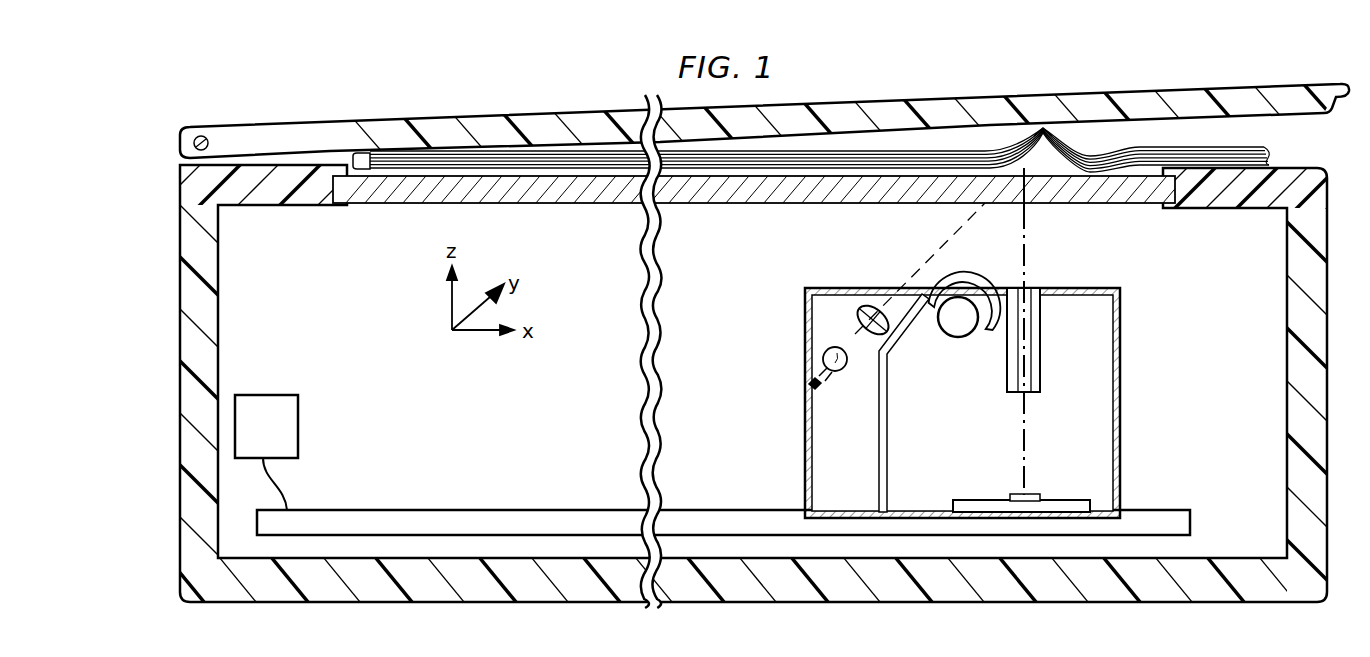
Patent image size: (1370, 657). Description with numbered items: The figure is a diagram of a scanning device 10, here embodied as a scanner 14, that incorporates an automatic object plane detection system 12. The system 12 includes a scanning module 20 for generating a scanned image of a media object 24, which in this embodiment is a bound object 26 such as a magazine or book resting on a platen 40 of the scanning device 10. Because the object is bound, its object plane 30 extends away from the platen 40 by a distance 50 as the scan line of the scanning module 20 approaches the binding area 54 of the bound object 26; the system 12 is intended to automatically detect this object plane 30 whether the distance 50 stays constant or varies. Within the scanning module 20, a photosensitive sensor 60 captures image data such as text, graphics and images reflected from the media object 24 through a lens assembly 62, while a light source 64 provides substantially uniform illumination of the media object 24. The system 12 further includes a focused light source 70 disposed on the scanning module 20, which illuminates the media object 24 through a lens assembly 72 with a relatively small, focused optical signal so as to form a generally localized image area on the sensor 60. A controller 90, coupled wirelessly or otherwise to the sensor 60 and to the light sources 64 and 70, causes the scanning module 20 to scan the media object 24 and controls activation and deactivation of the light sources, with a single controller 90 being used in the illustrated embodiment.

The scanning device 10 is at (126, 302).
The automatic object plane detection system 12 is at (1262, 259).
The scanner 14 is at (180, 385).
The scanning module 20 is at (1120, 342).
The media object 24 is at (852, 112).
The bound object 26 is at (946, 158).
The object plane 30 is at (1085, 190).
The platen 40 is at (358, 156).
The distance 50 is at (1032, 182).
The binding area 54 is at (1043, 127).
The photosensitive sensor 60 is at (1030, 495).
The lens assembly 62 is at (1042, 340).
The light source 64 is at (960, 343).
The focused light source 70 is at (843, 380).
The lens assembly 72 is at (878, 302).
The controller 90 is at (300, 425).